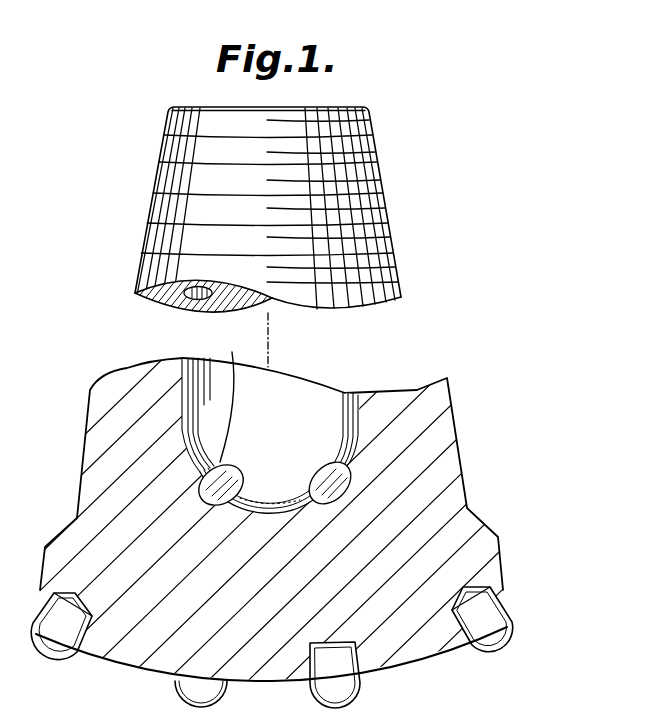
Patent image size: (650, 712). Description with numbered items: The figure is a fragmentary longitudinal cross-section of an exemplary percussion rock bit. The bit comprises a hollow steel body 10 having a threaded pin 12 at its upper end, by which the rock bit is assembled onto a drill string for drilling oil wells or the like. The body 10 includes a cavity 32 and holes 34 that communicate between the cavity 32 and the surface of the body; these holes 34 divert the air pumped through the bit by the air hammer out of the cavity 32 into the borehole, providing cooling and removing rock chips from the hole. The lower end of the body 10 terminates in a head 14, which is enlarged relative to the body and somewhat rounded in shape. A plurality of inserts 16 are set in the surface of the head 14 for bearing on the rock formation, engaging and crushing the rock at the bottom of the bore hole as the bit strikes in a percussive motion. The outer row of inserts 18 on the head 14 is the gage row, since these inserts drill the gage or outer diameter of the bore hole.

The hollow steel body 10 is at (325, 513).
The threaded pin 12 is at (387, 203).
The head 14 is at (503, 563).
The inserts 16 is at (353, 703).
The outer row of inserts 18 is at (510, 650).
The cavity 32 is at (310, 408).
The holes 34 is at (232, 352).